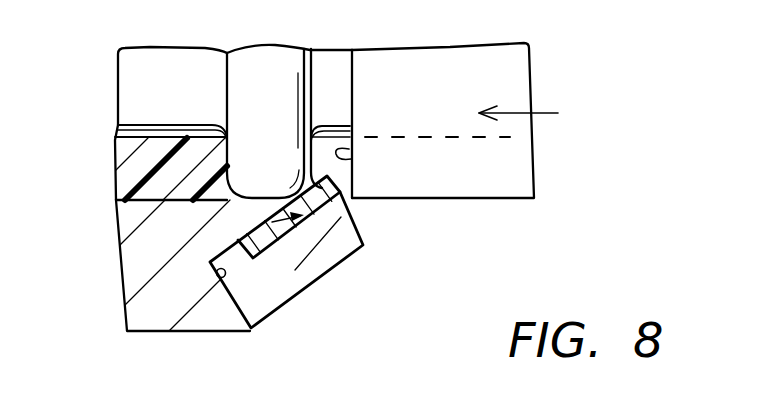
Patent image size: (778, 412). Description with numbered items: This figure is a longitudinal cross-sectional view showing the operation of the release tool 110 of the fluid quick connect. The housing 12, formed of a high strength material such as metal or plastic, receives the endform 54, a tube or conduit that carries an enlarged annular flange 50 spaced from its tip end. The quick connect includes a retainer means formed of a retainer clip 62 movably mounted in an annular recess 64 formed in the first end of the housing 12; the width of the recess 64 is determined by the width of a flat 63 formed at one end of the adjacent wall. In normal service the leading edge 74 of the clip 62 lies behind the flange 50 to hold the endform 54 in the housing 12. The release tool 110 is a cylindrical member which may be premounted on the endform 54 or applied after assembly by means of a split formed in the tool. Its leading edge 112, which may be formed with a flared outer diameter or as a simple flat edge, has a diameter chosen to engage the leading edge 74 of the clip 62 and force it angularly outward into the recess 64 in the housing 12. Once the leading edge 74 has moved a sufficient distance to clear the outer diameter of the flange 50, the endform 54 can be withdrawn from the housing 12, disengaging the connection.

The housing 12 is at (144, 252).
The annular flange 50 is at (280, 66).
The endform 54 is at (146, 95).
The retainer clip 62 is at (363, 246).
The flat 63 is at (223, 278).
The annular recess 64 is at (232, 260).
The leading edge of the clip 74 is at (336, 176).
The release tool 110 is at (520, 83).
The leading edge of the release tool 112 is at (349, 149).